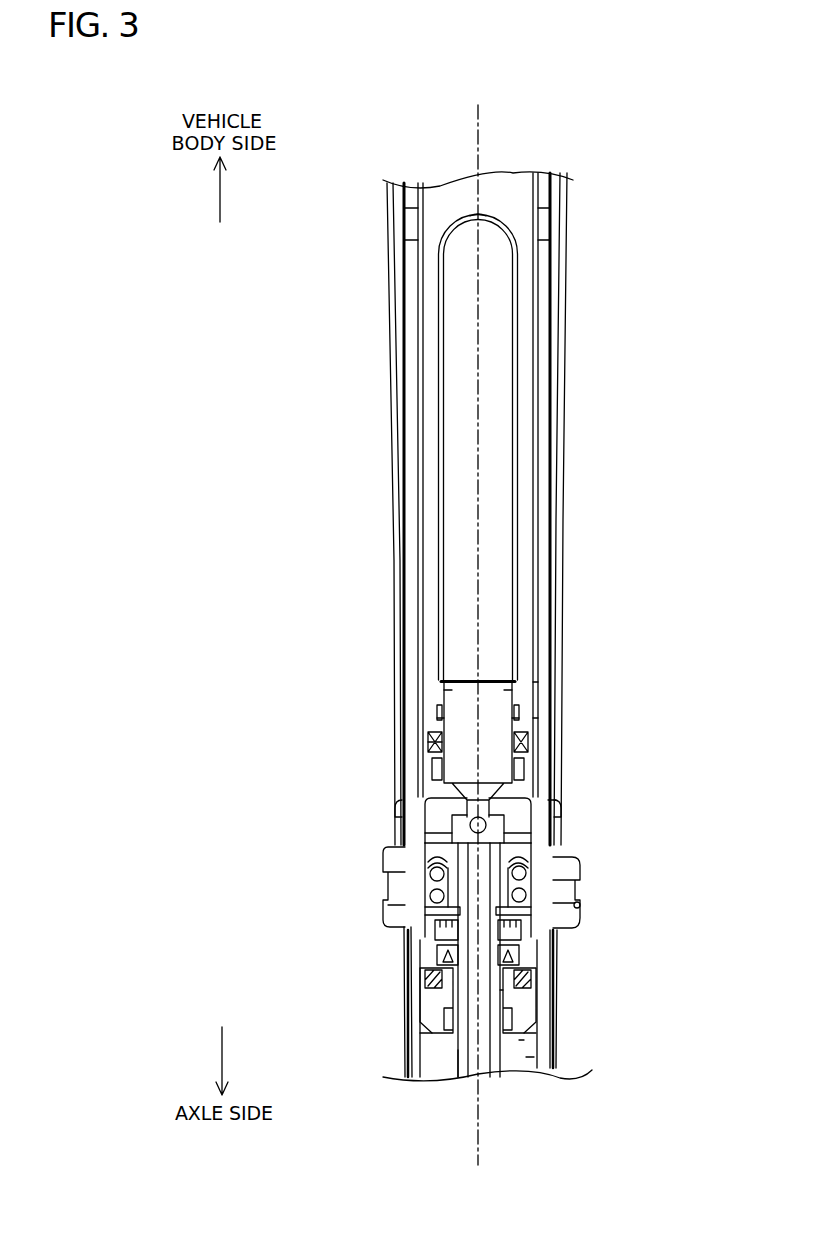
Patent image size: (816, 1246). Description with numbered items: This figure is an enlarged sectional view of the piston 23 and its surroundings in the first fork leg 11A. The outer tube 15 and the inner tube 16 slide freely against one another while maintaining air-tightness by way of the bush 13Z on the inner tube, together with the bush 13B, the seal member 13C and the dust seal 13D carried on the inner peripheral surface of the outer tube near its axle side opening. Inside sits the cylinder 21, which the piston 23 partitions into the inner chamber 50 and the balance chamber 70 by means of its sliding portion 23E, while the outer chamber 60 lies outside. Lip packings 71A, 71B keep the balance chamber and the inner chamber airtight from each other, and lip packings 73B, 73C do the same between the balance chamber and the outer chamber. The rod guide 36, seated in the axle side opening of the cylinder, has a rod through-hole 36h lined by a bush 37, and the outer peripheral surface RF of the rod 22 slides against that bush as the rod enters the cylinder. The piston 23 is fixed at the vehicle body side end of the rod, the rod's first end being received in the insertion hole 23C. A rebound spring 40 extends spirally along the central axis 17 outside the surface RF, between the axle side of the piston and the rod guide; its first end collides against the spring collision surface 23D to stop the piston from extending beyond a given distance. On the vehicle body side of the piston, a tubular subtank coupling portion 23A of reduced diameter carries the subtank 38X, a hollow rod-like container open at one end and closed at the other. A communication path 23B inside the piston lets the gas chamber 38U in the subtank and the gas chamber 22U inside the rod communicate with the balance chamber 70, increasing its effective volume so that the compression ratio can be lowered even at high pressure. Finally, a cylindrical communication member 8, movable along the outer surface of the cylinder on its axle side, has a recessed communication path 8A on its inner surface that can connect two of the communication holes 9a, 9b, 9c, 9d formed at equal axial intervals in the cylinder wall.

The first fork leg 11A is at (664, 158).
The subtank 38X is at (494, 210).
The inner chamber 50 is at (520, 195).
The bush 13Z is at (555, 265).
The cylinder 21 is at (420, 375).
The gas chamber 38U is at (492, 367).
The central axis 17 is at (480, 462).
The outer tube 15 is at (394, 492).
The communication hole 9a is at (537, 682).
The communication member 8 is at (556, 692).
The piston 23 is at (533, 714).
The communication hole 9b is at (537, 718).
The communication path 8A is at (537, 743).
The communication hole 9c is at (540, 763).
The communication hole 9d is at (553, 800).
The bush 13B is at (560, 812).
The subtank coupling portion 23A is at (447, 697).
The sliding portion 23E is at (440, 718).
The lip packing 71A is at (432, 737).
The lip packing 71B is at (428, 745).
The balance chamber 70 is at (433, 817).
The communication path 23B is at (500, 823).
The spring collision surface 23D is at (410, 869).
The seal member 13C is at (567, 878).
The rebound spring 40 is at (430, 880).
The insertion hole 23C is at (440, 903).
The dust seal 13D is at (570, 903).
The lip packing 73C is at (440, 943).
The lip packing 73B is at (442, 952).
The bush 37 is at (505, 982).
The inner tube 16 is at (405, 1020).
The rod guide 36 is at (533, 1030).
The rod 22 is at (507, 1047).
The outer chamber 60 is at (530, 1057).
The gas chamber 22U is at (473, 1057).
The rod through-hole 36h is at (498, 990).
The outer peripheral surface RF is at (522, 1040).